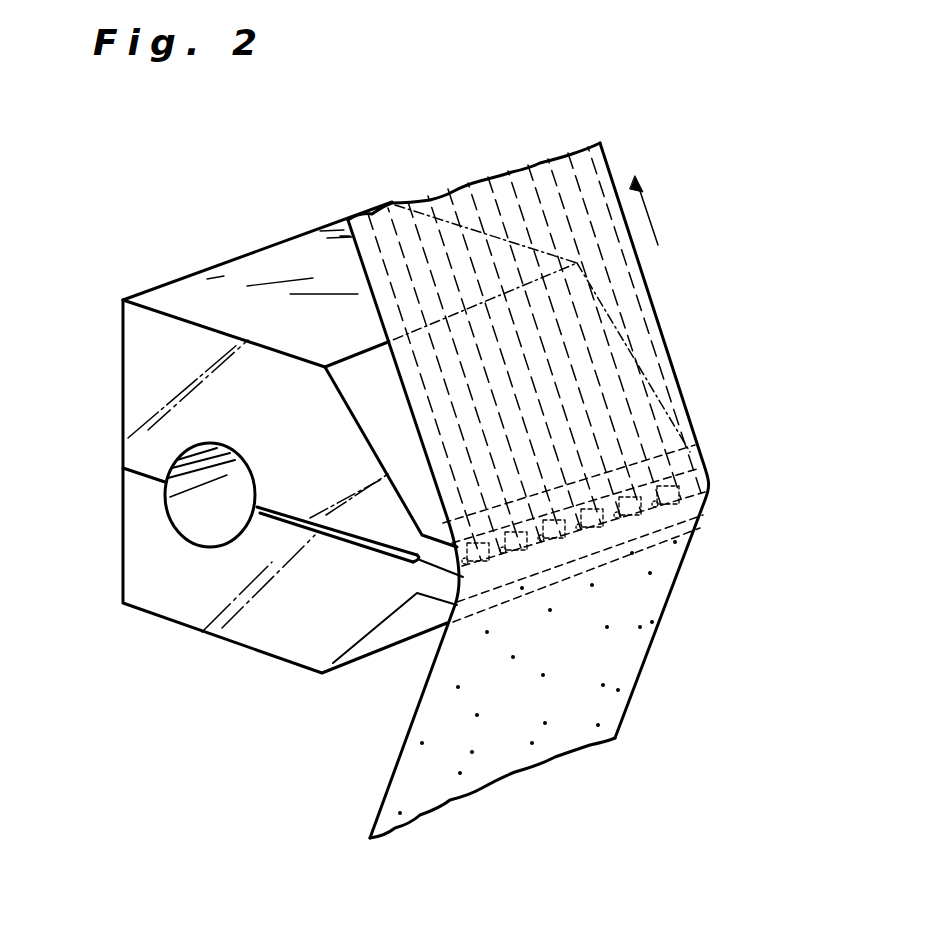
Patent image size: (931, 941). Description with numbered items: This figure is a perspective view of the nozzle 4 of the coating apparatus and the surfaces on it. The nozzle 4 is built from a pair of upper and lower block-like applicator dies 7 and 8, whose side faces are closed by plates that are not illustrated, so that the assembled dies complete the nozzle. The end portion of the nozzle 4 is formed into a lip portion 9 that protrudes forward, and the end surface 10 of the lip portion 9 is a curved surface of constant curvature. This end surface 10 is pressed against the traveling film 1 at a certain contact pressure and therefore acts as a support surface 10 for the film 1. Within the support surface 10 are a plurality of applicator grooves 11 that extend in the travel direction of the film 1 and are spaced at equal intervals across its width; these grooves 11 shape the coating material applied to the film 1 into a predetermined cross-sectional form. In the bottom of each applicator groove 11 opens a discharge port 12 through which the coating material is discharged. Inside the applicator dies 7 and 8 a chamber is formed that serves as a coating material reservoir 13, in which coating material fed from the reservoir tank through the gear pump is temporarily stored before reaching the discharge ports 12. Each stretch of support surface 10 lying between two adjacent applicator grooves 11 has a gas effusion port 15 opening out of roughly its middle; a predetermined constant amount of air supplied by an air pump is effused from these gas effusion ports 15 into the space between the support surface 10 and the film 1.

The film 1 is at (570, 735).
The nozzle 4 is at (220, 256).
The upper applicator die 7 is at (138, 393).
The lower applicator die 8 is at (177, 608).
The lip portion 9 is at (438, 556).
The end surface (support surface) 10 is at (462, 552).
The applicator grooves 11 is at (625, 493).
The discharge port 12 is at (703, 512).
The coating material reservoir (chamber) 13 is at (177, 523).
The gas effusion port 15 is at (605, 478).